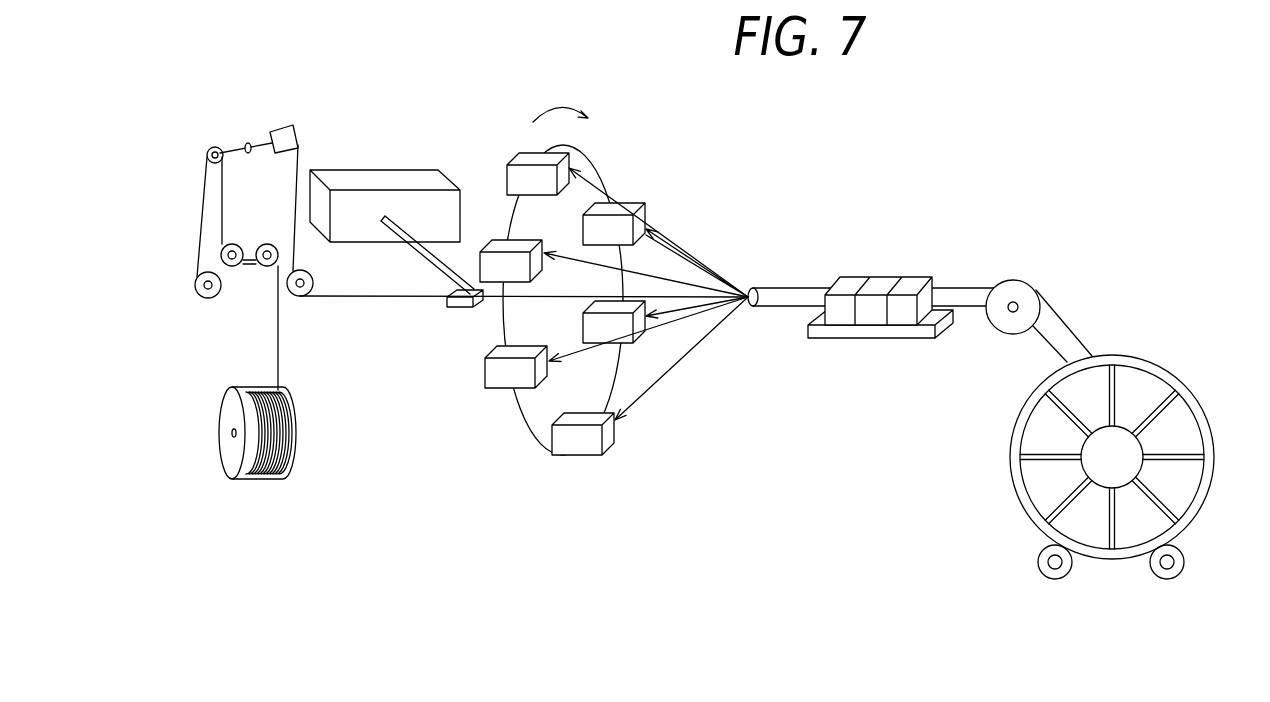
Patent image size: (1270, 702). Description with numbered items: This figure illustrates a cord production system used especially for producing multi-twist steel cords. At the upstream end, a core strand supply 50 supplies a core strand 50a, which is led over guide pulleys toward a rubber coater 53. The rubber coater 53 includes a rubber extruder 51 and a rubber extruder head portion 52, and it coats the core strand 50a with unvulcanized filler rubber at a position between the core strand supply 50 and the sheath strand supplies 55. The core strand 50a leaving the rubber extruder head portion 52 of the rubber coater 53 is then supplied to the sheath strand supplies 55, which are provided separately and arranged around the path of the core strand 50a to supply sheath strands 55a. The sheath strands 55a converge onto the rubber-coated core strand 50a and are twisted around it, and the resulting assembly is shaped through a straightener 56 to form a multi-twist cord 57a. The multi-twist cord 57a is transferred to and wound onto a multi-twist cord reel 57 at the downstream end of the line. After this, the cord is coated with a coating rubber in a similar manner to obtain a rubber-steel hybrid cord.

The core strand supply 50 is at (215, 492).
The core strand 50a is at (372, 300).
The rubber extruder 51 is at (394, 178).
The rubber extruder head portion 52 is at (460, 308).
The rubber coater 53 is at (446, 132).
The sheath strand supplies 55 is at (517, 492).
The sheath strands 55a is at (696, 384).
The straightener 56 is at (878, 258).
The multi-twist cord reel 57 is at (1155, 360).
The multi-twist cord 57a is at (1058, 316).